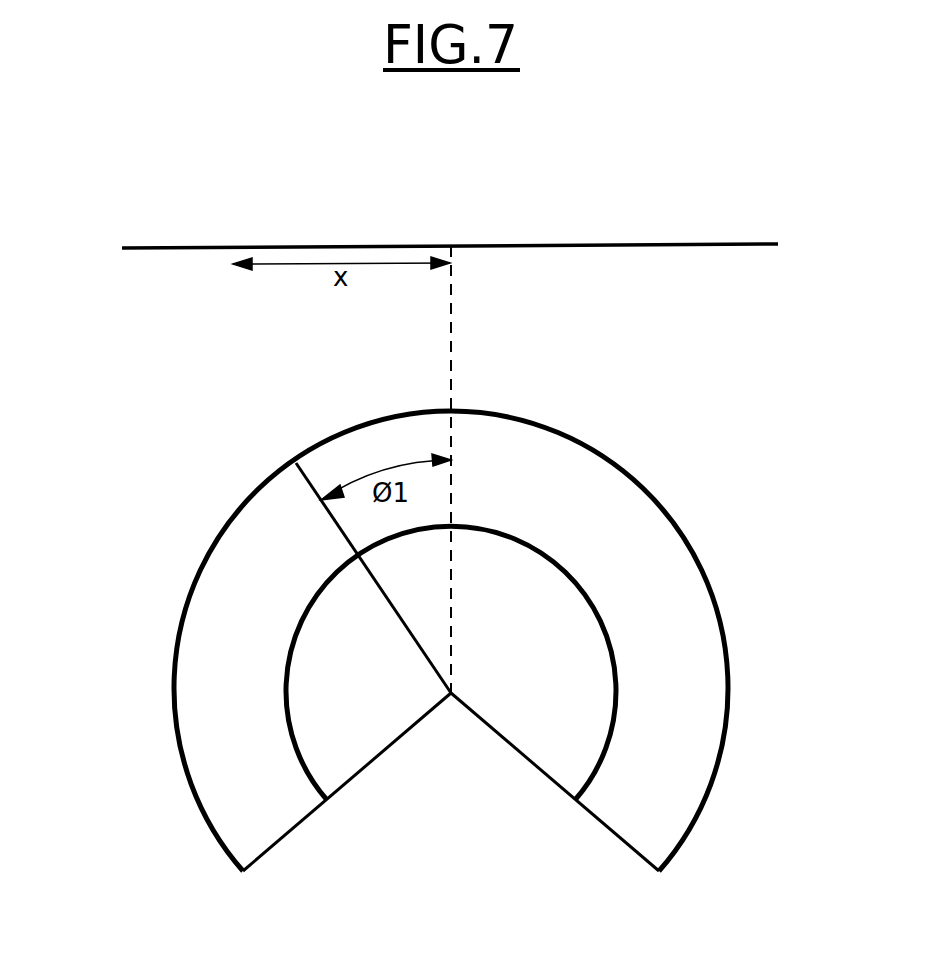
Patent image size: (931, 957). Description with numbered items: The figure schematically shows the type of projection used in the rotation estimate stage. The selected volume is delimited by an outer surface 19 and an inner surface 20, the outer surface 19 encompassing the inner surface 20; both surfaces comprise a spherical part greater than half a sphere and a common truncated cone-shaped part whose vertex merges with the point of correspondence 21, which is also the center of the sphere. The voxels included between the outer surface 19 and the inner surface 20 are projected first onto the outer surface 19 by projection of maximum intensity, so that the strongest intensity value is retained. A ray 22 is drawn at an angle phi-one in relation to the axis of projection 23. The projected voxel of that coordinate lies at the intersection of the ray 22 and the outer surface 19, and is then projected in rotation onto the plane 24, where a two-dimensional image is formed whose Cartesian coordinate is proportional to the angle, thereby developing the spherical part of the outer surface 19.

The outer surface 19 is at (226, 527).
The inner surface 20 is at (305, 612).
The point of correspondence 21 is at (451, 693).
The ray 22 is at (320, 500).
The axis of projection 23 is at (455, 280).
The plane 24 is at (274, 247).